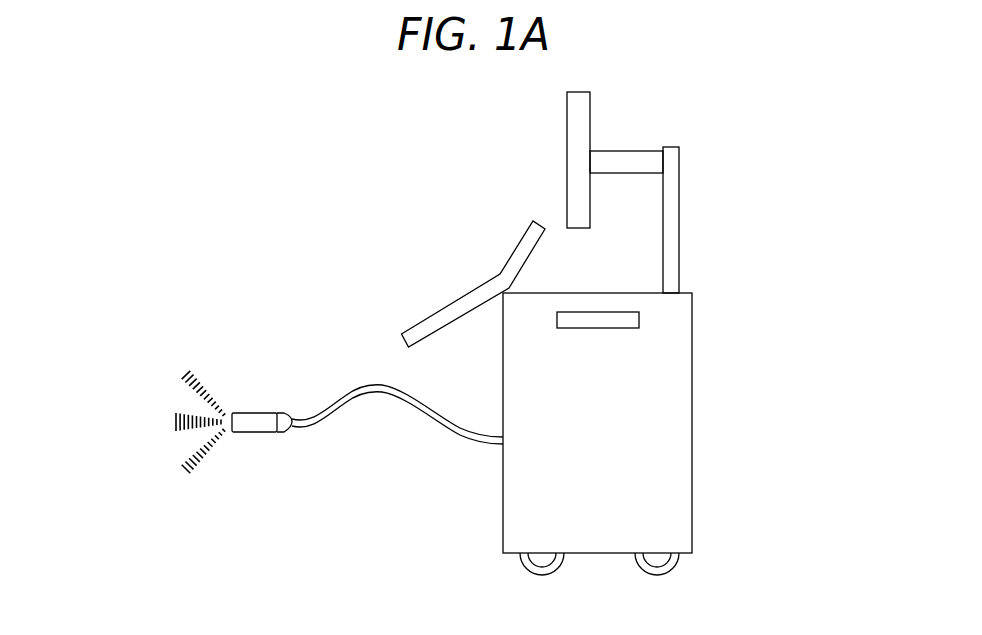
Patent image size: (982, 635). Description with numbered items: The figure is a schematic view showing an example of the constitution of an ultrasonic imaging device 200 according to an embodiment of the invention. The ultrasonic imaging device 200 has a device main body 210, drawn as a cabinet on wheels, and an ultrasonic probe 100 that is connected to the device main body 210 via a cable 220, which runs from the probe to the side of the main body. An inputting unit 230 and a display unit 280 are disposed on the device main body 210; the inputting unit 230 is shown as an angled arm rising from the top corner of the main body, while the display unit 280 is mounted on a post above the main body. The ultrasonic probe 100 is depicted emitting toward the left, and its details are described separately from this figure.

The ultrasonic probe 100 is at (297, 392).
The ultrasonic imaging device 200 is at (716, 105).
The device main body 210 is at (687, 398).
The cable 220 is at (405, 398).
The inputting unit 230 is at (463, 294).
The display unit 280 is at (567, 147).